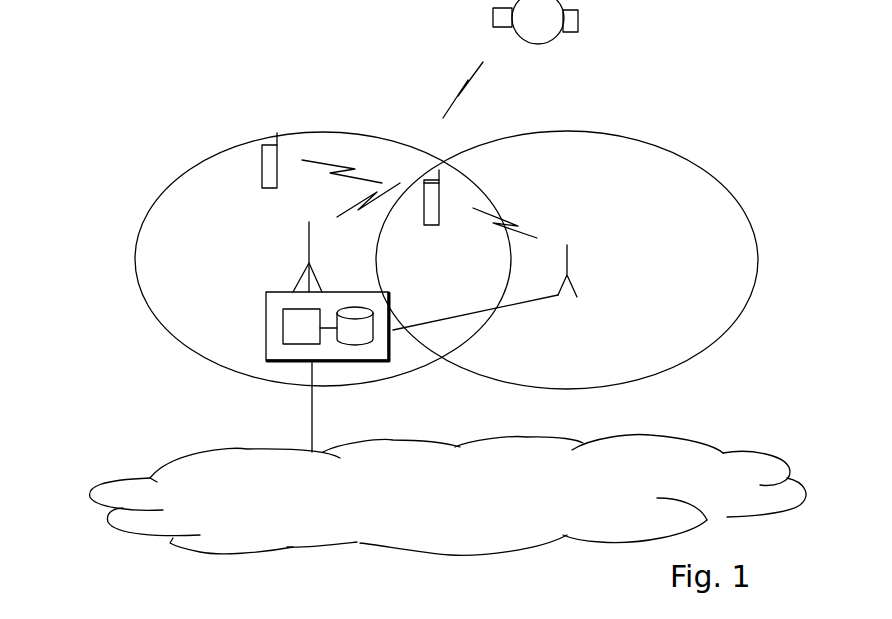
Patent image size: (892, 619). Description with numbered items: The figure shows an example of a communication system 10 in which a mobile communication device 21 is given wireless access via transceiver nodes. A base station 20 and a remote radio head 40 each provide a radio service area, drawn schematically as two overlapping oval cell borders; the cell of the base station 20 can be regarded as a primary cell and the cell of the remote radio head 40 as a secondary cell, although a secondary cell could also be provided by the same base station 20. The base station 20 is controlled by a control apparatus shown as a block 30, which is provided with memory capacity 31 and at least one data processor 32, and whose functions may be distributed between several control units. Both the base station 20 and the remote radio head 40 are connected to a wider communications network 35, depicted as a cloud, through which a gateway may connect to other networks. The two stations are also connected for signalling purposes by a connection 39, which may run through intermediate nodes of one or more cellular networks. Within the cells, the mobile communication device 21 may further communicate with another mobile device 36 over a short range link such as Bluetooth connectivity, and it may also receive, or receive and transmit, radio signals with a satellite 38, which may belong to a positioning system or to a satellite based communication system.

The communication system 10 is at (133, 78).
The base station 20 is at (308, 250).
The mobile communication device 21 is at (434, 200).
The control apparatus 30 is at (229, 310).
The memory capacity 31 is at (352, 338).
The data processor 32 is at (292, 318).
The communications network 35 is at (150, 478).
The mobile device 36 is at (257, 143).
The satellite 38 is at (548, 2).
The connection 39 is at (422, 328).
The remote radio head 40 is at (578, 278).